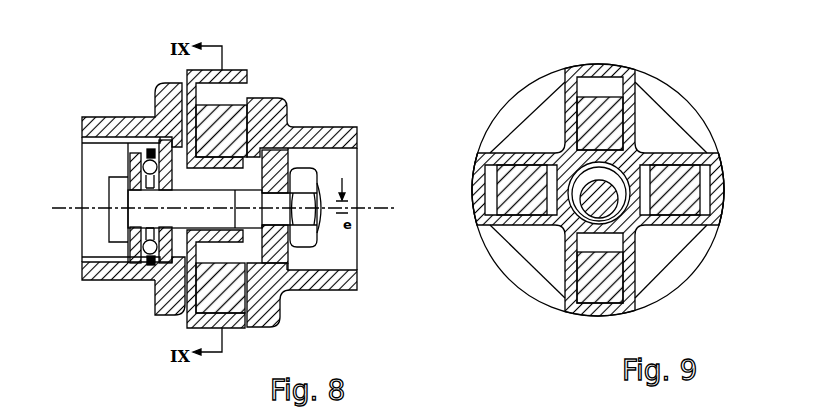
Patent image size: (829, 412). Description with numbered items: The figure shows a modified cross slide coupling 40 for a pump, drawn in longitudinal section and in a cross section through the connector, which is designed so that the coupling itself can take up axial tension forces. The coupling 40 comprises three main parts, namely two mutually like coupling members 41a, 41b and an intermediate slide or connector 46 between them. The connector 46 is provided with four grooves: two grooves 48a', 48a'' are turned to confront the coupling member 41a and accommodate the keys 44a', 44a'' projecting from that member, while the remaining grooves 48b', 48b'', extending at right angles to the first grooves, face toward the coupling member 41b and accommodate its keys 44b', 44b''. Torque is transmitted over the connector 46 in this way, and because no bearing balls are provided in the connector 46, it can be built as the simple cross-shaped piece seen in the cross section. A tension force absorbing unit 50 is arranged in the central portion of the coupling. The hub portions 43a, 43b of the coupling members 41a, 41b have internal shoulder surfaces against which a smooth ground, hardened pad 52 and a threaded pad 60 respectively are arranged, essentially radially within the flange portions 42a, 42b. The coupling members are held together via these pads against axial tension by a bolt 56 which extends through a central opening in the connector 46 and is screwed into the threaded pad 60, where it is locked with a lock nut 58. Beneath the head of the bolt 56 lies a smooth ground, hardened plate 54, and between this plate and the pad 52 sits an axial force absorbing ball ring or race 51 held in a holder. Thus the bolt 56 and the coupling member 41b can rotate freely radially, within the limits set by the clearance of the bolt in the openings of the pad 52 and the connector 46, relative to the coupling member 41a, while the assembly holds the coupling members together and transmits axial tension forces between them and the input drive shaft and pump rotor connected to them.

In FIG. 8, the cross slide coupling 40 is at (322, 73).
In FIG. 8, the coupling member 41a is at (137, 112).
In FIG. 8, the coupling member 41b is at (292, 118).
In FIG. 8, the flange portion 42a is at (162, 291).
In FIG. 9, the flange portion 42a is at (522, 112).
In FIG. 8, the flange portion 42b is at (282, 314).
In FIG. 8, the hub portion 43a is at (98, 279).
In FIG. 8, the hub portion 43b is at (340, 290).
In FIG. 9, the key 44a' is at (502, 214).
In FIG. 9, the key 44a'' is at (697, 171).
In FIG. 8, the key 44b' is at (244, 113).
In FIG. 9, the key 44b' is at (641, 115).
In FIG. 8, the key 44b'' is at (230, 313).
In FIG. 9, the key 44b'' is at (583, 292).
In FIG. 8, the intermediate slide or connector 46 is at (233, 69).
In FIG. 9, the intermediate slide or connector 46 is at (591, 65).
In FIG. 9, the groove 48a' is at (457, 187).
In FIG. 9, the groove 48a'' is at (738, 190).
In FIG. 9, the groove 48b' is at (660, 101).
In FIG. 9, the groove 48b'' is at (598, 262).
In FIG. 8, the tension force absorbing unit 50 is at (102, 222).
In FIG. 8, the axial force absorbing ball ring or race 51 is at (145, 153).
In FIG. 8, the smooth ground, hardened pad 52 is at (160, 141).
In FIG. 8, the smooth ground, hardened plate 54 is at (132, 252).
In FIG. 8, the bolt 56 is at (92, 201).
In FIG. 8, the lock nut 58 is at (307, 180).
In FIG. 8, the threaded pad 60 is at (290, 257).